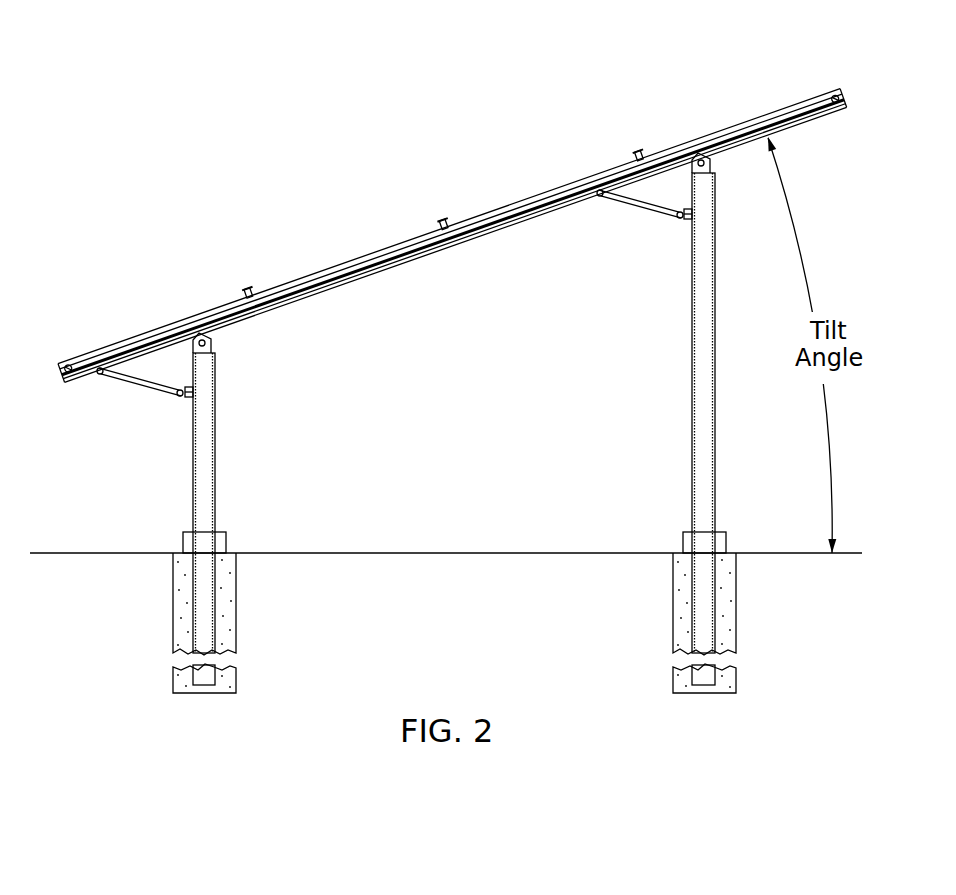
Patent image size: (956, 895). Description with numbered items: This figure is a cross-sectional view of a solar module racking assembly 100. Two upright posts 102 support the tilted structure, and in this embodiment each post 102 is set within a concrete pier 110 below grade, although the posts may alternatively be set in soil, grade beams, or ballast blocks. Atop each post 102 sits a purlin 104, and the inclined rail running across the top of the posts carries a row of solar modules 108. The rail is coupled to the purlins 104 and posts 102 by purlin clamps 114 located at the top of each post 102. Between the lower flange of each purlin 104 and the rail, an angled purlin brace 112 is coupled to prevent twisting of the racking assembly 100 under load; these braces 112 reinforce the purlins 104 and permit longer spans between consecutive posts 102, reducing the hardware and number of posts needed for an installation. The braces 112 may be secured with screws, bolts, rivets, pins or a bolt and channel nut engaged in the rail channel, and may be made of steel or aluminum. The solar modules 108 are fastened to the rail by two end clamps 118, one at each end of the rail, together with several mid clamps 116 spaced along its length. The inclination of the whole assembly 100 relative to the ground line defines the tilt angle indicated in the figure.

The racking assembly 100 is at (243, 211).
The post 102 is at (215, 470).
The purlin 104 is at (190, 396).
The solar module 108 is at (563, 182).
The concrete pier 110 is at (237, 605).
The purlin brace 112 is at (138, 386).
The purlin clamp 114 is at (212, 343).
The mid clamp 116 is at (253, 290).
The end clamp 118 is at (60, 371).